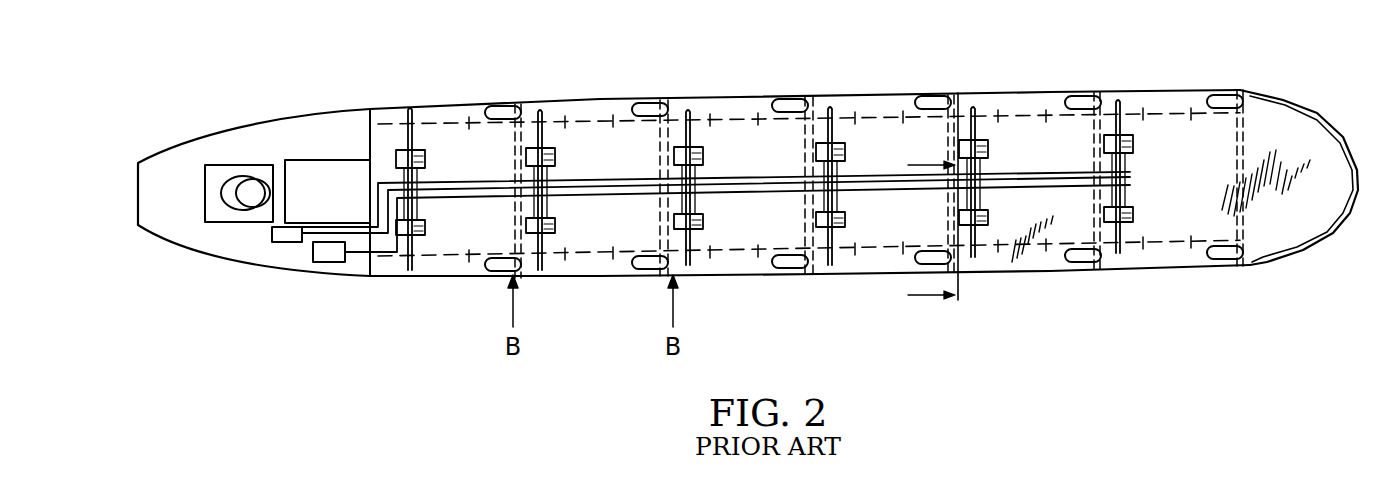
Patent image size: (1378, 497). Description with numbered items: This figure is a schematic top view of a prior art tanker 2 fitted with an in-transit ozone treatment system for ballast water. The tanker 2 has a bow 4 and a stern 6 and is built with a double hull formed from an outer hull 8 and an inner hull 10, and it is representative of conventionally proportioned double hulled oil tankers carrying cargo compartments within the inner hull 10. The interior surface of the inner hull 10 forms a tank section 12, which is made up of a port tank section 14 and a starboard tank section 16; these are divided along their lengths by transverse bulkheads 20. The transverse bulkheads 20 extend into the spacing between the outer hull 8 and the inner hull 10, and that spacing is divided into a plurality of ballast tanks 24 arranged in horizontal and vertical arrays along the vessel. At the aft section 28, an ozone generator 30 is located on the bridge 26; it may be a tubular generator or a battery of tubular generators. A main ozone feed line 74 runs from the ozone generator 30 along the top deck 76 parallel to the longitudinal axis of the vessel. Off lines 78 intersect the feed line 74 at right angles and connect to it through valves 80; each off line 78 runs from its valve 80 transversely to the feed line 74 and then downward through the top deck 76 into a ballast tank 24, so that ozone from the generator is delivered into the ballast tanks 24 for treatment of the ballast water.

The tanker 2 is at (840, 90).
The bow 4 is at (1360, 197).
The stern 6 is at (158, 153).
The outer hull 8 is at (383, 103).
The inner hull 10 is at (555, 150).
The tank section 12 is at (1018, 128).
The port tank section 14 is at (767, 99).
The starboard tank section 16 is at (750, 262).
The transverse bulkheads 20 is at (517, 168).
The ballast tanks 24 is at (445, 112).
The bridge 26 is at (322, 140).
The aft section 28 is at (198, 247).
The ozone generator 30 is at (328, 257).
The main ozone feed line 74 is at (494, 201).
The top deck 76 is at (903, 231).
The off lines 78 is at (547, 130).
The valves 80 is at (425, 160).